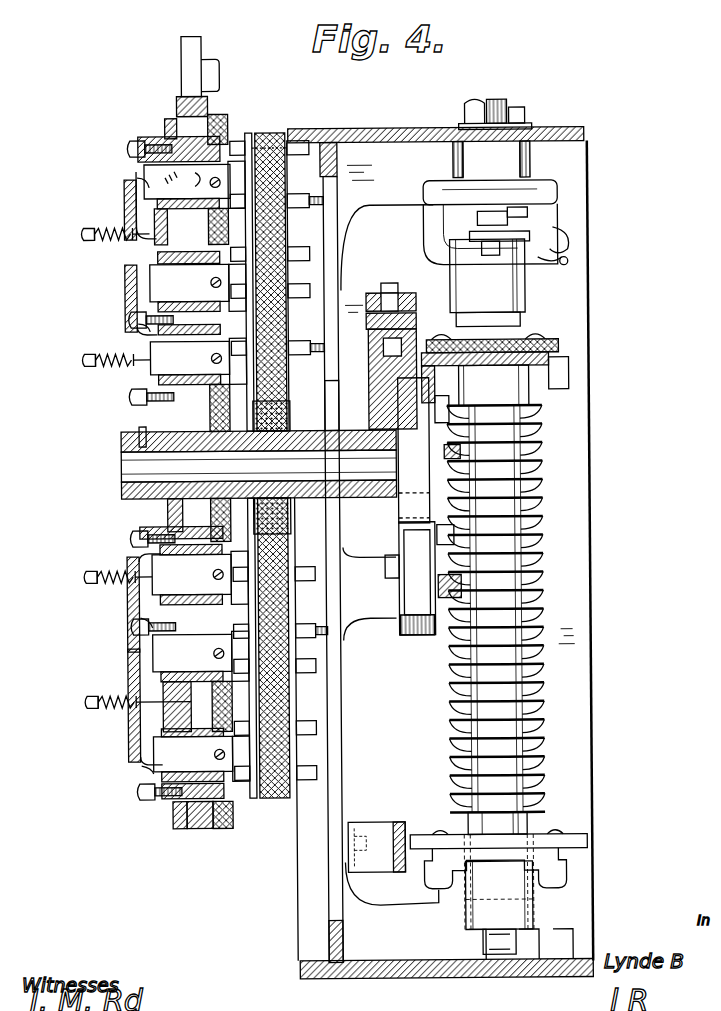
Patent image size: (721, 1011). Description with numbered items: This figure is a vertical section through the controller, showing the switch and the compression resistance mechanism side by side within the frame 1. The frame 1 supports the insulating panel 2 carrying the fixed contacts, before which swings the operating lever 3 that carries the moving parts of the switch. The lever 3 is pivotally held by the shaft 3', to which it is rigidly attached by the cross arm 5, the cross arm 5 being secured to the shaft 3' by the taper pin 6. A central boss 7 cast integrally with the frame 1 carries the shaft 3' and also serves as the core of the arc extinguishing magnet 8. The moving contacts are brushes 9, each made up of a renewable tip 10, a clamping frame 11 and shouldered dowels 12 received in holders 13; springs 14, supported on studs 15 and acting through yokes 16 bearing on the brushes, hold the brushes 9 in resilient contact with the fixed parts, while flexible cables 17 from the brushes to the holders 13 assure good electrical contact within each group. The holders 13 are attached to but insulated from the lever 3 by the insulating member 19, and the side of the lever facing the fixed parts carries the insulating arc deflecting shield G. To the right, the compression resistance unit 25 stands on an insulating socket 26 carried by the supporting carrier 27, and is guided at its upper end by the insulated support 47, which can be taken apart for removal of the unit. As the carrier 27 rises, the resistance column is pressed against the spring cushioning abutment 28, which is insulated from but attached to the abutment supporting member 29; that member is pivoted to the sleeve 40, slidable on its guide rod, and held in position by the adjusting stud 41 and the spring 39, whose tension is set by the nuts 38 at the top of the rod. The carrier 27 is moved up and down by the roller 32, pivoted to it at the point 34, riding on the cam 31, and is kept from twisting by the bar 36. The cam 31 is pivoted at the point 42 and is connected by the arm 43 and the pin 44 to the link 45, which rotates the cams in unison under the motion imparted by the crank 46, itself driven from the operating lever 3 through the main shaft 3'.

The frame 1 is at (366, 122).
The insulating panel 2 is at (268, 132).
The operating lever 3 is at (184, 447).
The shaft 3' is at (237, 456).
The cross arm 5 is at (122, 490).
The taper pin 6 is at (140, 426).
The central boss 7 is at (314, 428).
The arc extinguishing magnet 8 is at (291, 517).
The brushes 9 is at (189, 468).
The renewable tip 10 is at (238, 207).
The clamping frame 11 is at (160, 200).
The shouldered dowels 12 is at (140, 180).
The holders 13 is at (152, 134).
The springs 14 is at (104, 226).
The studs 15 is at (86, 232).
The yokes 16 is at (127, 266).
The flexible cables 17 is at (133, 150).
The insulating member 19 is at (172, 117).
The insulating arc deflecting shield G is at (222, 115).
The resistance unit 25 is at (478, 688).
The insulating sockets 26 is at (570, 835).
The supporting carriers 27 is at (498, 897).
The spring cushioning abutments 28 is at (457, 214).
The abutment supporting members 29 is at (566, 199).
The cam 31 is at (410, 511).
The rollers 32 is at (399, 533).
The points 34 is at (386, 568).
The bar 36 is at (400, 826).
The nuts 38 is at (473, 109).
The spring 39 is at (477, 238).
The sleeves 40 is at (468, 246).
The adjusting studs 41 is at (568, 220).
The points 42 is at (461, 455).
The arms 43 is at (412, 415).
The pins 44 is at (372, 322).
The link 45 is at (384, 286).
The crank 46 is at (380, 380).
The insulated support 47 is at (570, 352).